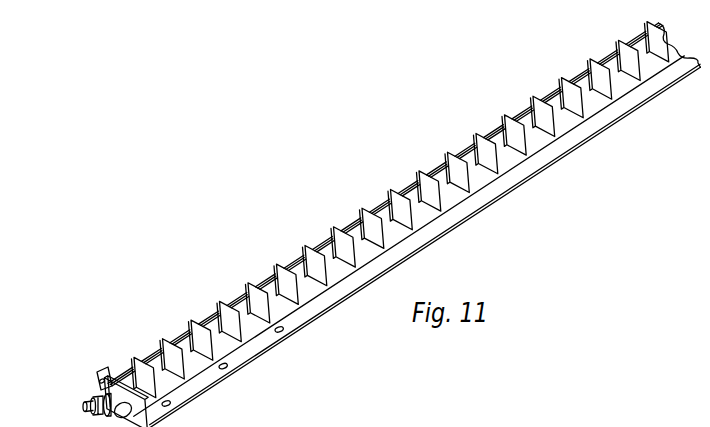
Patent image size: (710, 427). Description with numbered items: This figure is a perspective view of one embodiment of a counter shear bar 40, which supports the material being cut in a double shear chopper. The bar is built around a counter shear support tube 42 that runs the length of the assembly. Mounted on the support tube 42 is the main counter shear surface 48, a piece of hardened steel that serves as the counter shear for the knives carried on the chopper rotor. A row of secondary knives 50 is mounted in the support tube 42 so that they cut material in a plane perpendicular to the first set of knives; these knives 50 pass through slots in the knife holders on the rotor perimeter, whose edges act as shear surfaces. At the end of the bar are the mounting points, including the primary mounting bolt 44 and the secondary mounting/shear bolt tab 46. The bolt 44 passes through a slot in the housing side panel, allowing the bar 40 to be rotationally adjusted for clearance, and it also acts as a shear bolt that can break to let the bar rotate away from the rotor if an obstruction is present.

The counter shear bar 40 is at (268, 206).
The counter shear support tube 42 is at (275, 330).
The primary mounting bolt 44 is at (82, 409).
The secondary mounting/shear bolt tab 46 is at (97, 378).
The main counter shear surface 48 is at (181, 332).
The secondary knives 50 is at (312, 260).